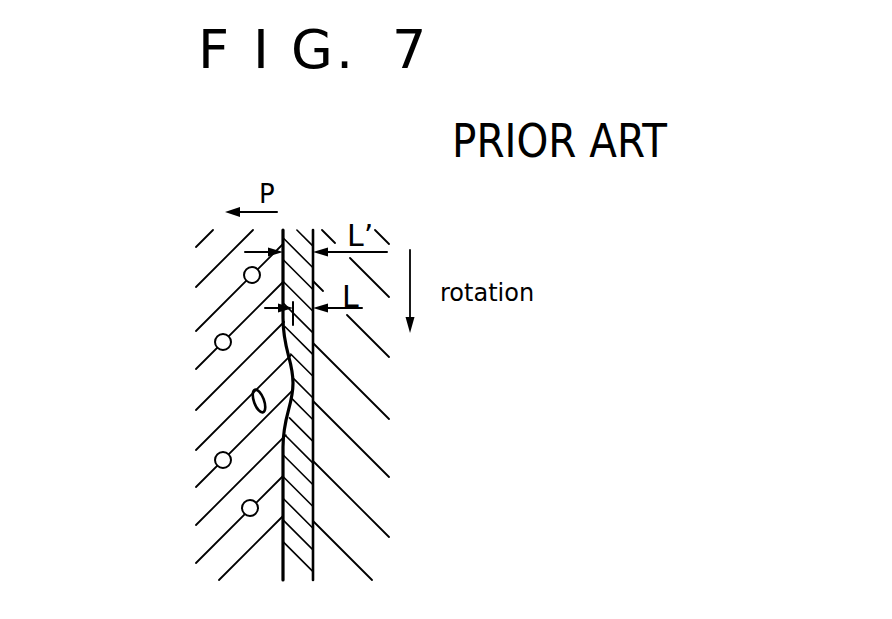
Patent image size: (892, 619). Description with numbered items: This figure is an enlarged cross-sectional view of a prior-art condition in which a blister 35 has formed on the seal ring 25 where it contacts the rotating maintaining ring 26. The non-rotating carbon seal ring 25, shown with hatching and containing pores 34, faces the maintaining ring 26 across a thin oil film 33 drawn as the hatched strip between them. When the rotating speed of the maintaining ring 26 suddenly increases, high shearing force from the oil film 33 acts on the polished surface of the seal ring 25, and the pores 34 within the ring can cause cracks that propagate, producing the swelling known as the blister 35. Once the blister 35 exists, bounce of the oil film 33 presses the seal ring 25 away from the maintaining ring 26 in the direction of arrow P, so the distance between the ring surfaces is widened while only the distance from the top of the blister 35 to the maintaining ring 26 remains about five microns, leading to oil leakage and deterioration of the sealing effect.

The seal ring 25 is at (215, 410).
The maintaining ring 26 is at (367, 440).
The oil film 33 is at (302, 501).
The pores 34 is at (253, 398).
The blister 35 is at (295, 393).